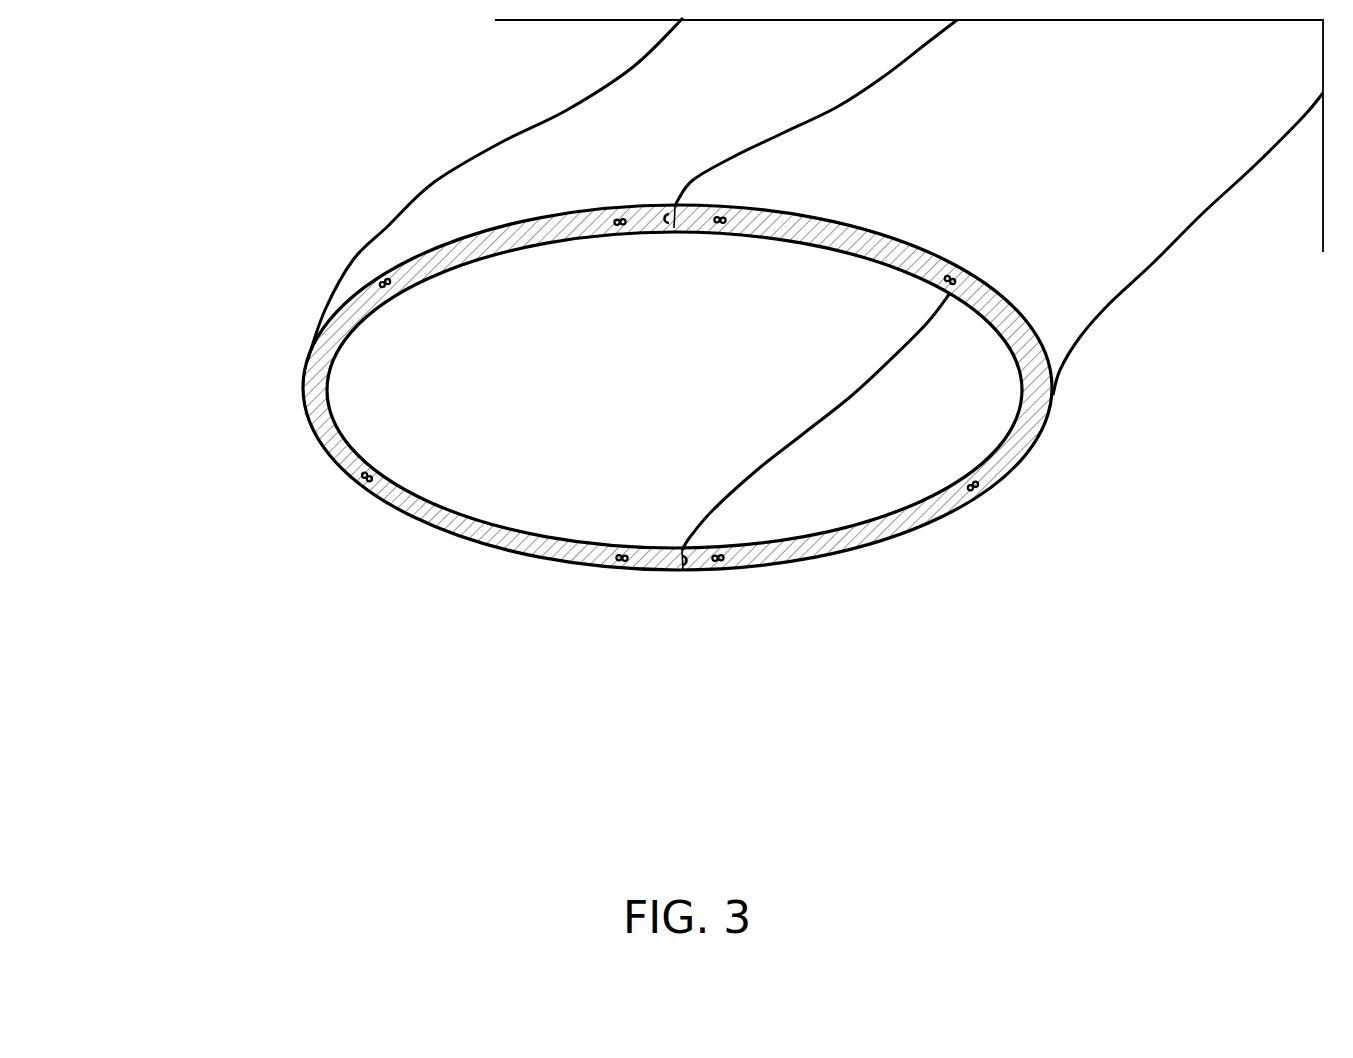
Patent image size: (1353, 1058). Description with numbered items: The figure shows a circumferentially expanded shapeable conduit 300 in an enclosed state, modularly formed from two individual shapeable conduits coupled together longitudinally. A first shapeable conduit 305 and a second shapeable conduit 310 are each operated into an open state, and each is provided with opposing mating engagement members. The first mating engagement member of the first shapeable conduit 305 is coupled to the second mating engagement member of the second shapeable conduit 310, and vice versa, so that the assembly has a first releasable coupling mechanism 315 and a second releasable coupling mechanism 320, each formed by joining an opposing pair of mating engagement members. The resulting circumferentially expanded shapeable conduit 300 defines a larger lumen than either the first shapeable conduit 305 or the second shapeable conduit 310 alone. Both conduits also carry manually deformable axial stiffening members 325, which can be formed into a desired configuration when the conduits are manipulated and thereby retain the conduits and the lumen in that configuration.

The circumferentially expanded shapeable conduit 300 is at (199, 68).
The first shapeable conduit 305 is at (348, 263).
The second shapeable conduit 310 is at (1110, 304).
The first releasable coupling mechanism 315 is at (671, 232).
The second releasable coupling mechanism 320 is at (681, 548).
The manually deformable axial stiffening members 325 is at (370, 470).